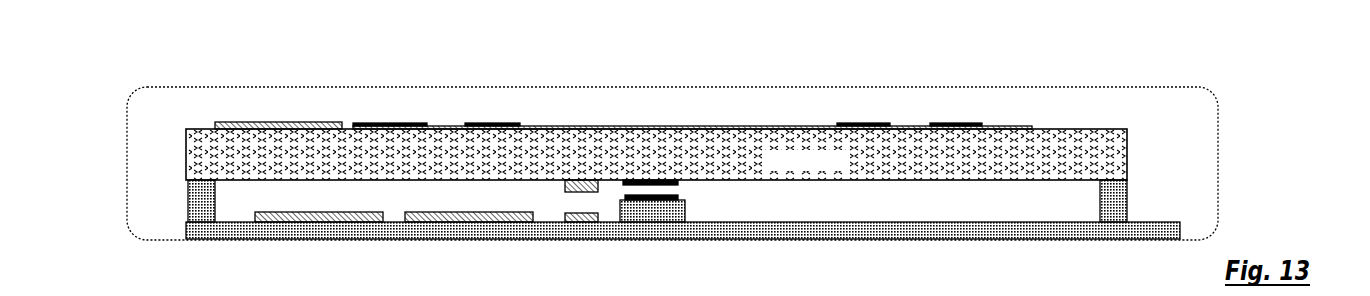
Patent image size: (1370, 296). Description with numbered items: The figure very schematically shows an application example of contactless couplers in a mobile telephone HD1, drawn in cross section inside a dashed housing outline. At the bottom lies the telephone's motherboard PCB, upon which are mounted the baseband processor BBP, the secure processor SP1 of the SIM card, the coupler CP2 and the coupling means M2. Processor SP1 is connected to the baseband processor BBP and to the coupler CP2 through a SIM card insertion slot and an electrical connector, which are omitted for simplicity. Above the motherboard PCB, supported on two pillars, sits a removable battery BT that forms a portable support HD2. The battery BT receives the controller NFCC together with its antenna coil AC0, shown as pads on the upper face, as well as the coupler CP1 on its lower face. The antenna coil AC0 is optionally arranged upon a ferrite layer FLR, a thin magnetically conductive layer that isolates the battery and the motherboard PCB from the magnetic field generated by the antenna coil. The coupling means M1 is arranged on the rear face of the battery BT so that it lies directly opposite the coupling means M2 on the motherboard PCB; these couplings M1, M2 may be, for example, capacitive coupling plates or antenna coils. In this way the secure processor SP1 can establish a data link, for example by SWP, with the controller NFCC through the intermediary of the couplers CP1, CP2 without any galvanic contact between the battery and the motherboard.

The mobile telephone HD1 is at (1150, 90).
The portable support HD2 is at (656, 154).
The removable battery BT is at (788, 168).
The controller NFCC is at (292, 122).
The ferrite layer FLR is at (750, 128).
The antenna coil AC0 is at (403, 125).
The coupler CP1 is at (585, 183).
The coupler CP2 is at (580, 223).
The coupling means M1 is at (641, 181).
The coupling means M2 is at (658, 223).
The baseband processor BBP is at (323, 223).
The secure processor SP1 is at (475, 223).
The motherboard PCB is at (802, 223).